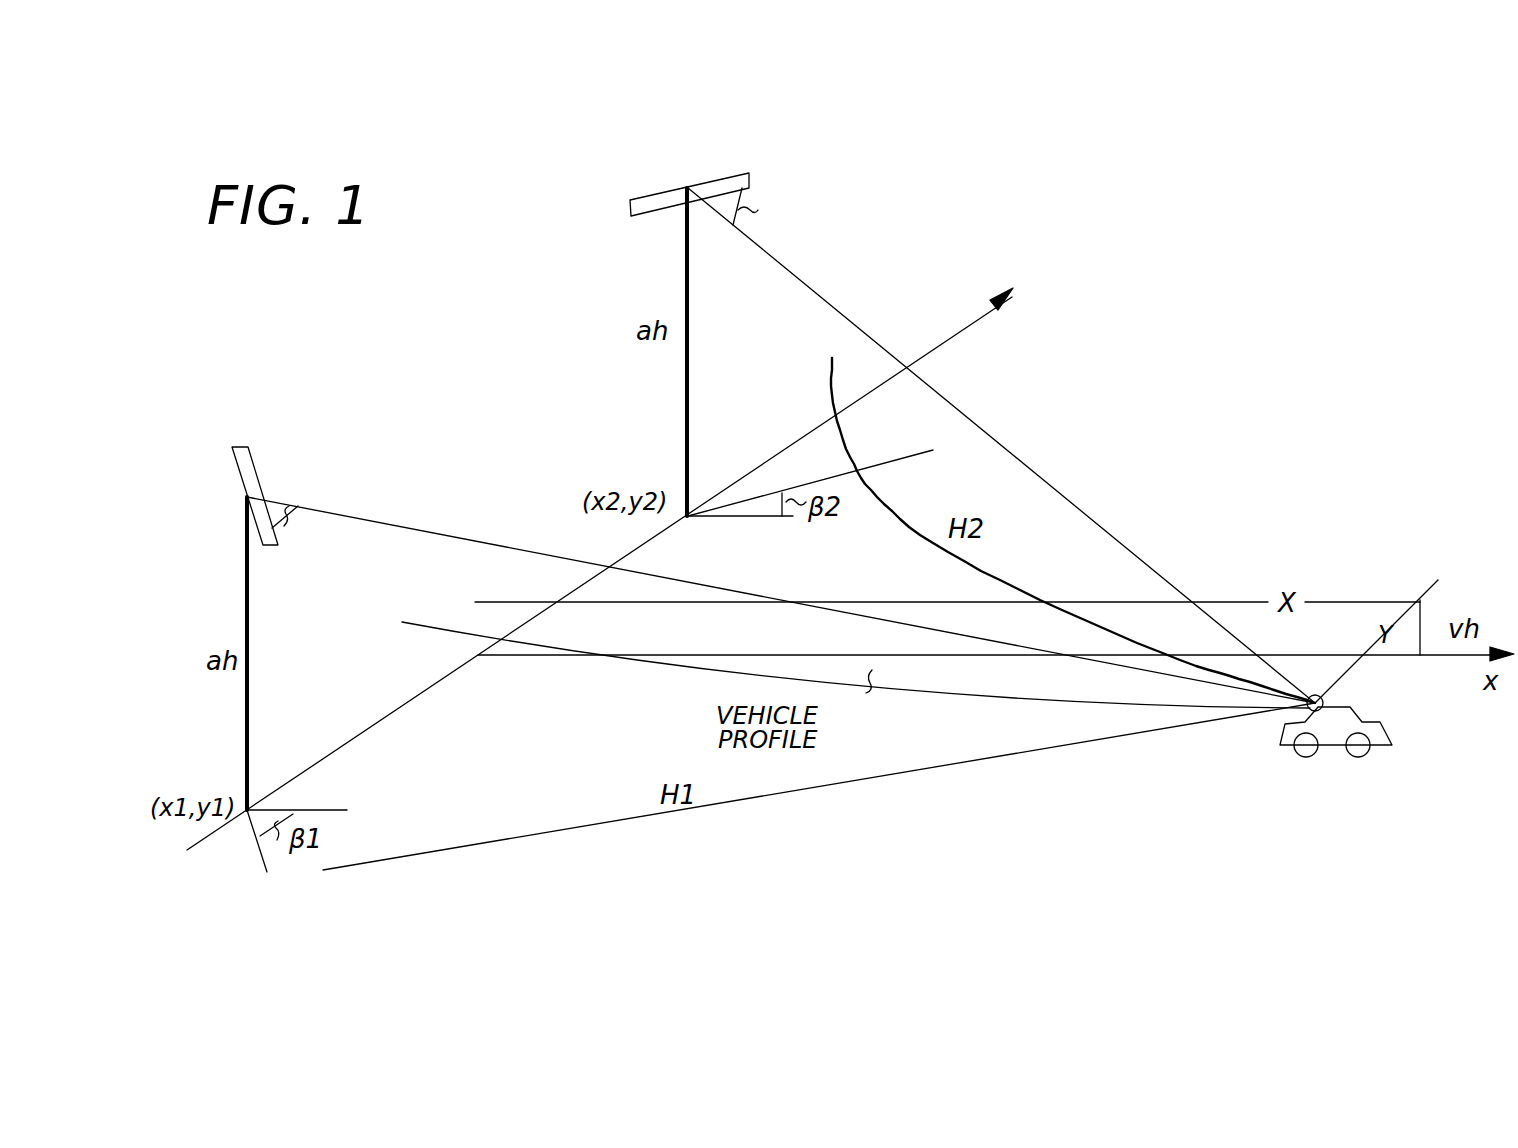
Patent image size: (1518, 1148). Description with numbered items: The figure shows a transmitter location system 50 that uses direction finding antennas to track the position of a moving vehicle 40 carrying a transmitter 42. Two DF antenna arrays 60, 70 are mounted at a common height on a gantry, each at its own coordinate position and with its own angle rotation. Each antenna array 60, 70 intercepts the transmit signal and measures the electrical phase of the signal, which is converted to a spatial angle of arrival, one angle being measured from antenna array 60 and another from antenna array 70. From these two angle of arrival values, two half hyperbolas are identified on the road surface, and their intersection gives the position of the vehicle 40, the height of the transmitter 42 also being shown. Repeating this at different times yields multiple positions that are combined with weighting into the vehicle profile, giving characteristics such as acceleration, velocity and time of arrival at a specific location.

The moving vehicle 40 is at (1324, 762).
The transmitter 42 is at (1324, 700).
The transmitter location system 50 is at (1062, 360).
The antenna array 60 is at (234, 481).
The antenna array 70 is at (630, 208).